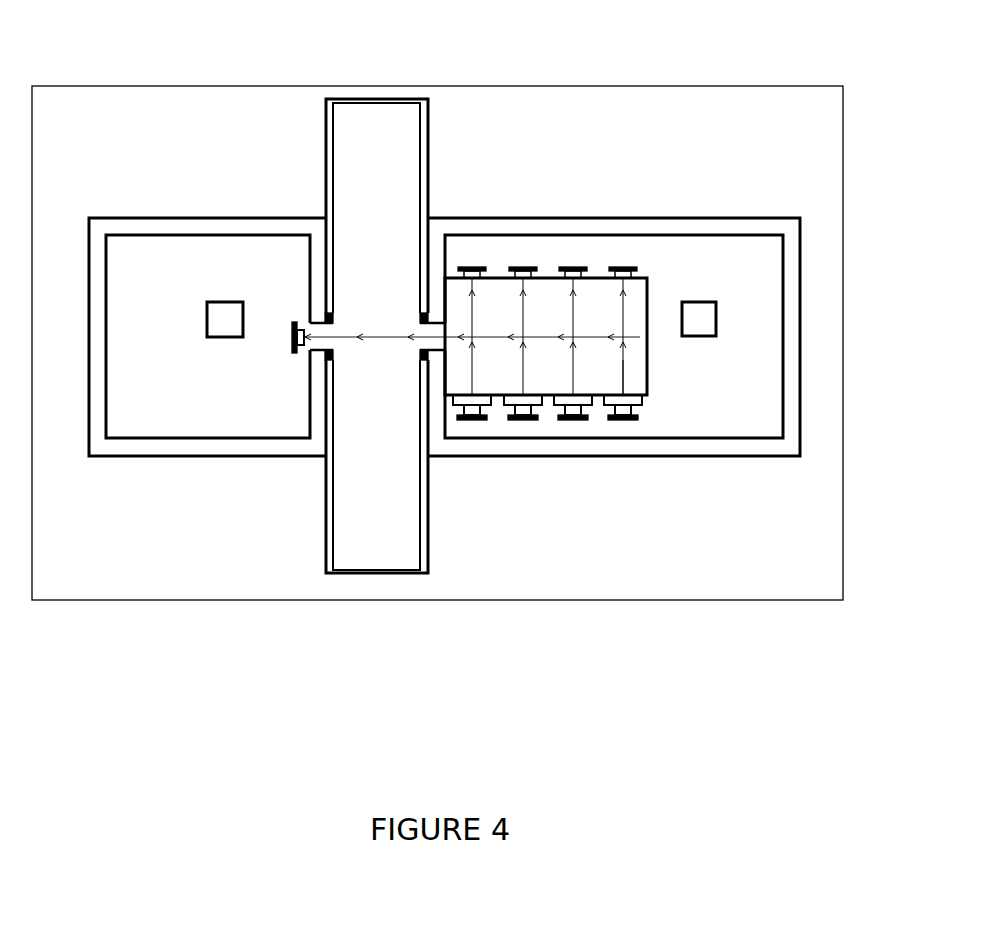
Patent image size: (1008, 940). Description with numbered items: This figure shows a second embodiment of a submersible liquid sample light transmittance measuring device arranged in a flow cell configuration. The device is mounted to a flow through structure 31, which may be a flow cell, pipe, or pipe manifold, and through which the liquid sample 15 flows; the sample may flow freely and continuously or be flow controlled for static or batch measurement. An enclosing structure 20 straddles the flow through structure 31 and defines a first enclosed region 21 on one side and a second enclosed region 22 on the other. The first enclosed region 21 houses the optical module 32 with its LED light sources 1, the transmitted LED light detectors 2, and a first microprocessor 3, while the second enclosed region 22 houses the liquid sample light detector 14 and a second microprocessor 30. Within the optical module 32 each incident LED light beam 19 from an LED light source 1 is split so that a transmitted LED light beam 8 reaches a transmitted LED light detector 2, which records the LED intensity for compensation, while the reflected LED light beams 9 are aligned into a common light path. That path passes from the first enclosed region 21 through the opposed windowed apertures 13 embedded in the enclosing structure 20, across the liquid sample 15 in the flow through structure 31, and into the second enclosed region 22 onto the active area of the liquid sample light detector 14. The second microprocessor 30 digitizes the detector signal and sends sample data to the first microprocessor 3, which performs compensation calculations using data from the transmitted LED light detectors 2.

The LED light source 1 is at (631, 424).
The transmitted LED light detector 2 is at (625, 264).
The first microprocessor 3 is at (698, 300).
The transmitted LED light beam 8 is at (626, 308).
The reflected LED light beam 9 is at (387, 341).
The opposed windowed apertures 13 is at (331, 318).
The liquid sample light detector 14 is at (293, 356).
The liquid sample 15 is at (390, 227).
The incident LED light beam 19 is at (626, 366).
The enclosing structure 20 is at (212, 458).
The first enclosed region 21 is at (550, 245).
The second enclosed region 22 is at (250, 250).
The second microprocessor 30 is at (225, 300).
The flow through structure 31 is at (397, 575).
The optical module 32 is at (505, 369).